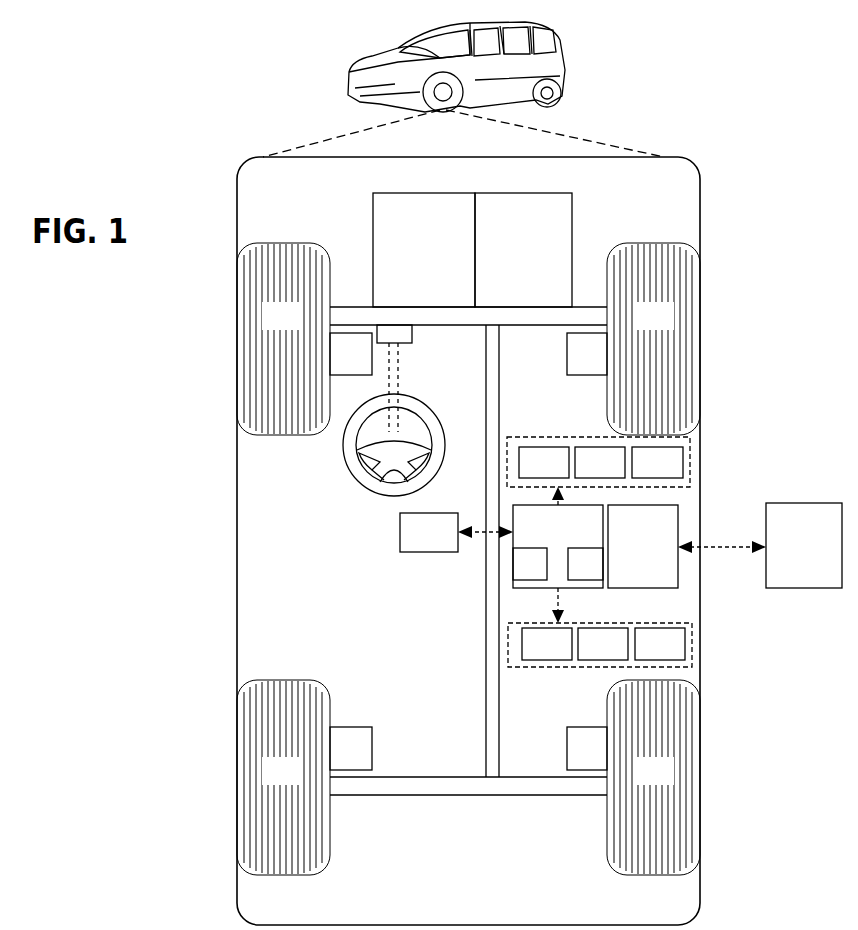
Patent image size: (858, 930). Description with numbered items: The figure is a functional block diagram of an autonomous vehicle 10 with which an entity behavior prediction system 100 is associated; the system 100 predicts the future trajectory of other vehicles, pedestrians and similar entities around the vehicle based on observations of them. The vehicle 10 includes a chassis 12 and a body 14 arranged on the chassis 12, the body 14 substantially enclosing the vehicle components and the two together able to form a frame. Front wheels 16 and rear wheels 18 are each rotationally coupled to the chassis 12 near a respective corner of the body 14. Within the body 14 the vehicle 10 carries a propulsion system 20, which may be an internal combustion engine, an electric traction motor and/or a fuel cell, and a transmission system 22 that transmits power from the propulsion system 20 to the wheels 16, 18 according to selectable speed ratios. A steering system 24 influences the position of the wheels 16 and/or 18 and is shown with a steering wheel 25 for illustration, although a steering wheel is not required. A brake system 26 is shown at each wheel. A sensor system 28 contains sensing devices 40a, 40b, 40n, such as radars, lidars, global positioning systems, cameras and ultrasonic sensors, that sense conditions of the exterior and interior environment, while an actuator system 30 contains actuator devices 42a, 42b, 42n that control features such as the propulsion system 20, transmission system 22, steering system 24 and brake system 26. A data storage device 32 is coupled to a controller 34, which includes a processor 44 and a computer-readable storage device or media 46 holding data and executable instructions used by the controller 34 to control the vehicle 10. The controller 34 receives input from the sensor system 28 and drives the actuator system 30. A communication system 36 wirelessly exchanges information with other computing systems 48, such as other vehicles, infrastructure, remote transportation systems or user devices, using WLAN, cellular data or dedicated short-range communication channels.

The vehicle 10 is at (346, 74).
The chassis 12 is at (495, 795).
The body 14 is at (237, 508).
The front wheels 16 is at (468, 339).
The rear wheels 18 is at (468, 777).
The propulsion system 20 is at (424, 250).
The transmission system 22 is at (523, 250).
The steering system 24 is at (362, 512).
The steering wheel 25 is at (432, 410).
The brake system 26 is at (468, 551).
The sensor system 28 is at (553, 437).
The actuator system 30 is at (540, 667).
The data storage device 32 is at (429, 532).
The controller 34 is at (558, 546).
The communication system 36 is at (643, 546).
The sensing device 40a is at (544, 462).
The sensing device 40b is at (600, 462).
The sensing device 40n is at (657, 462).
The actuator device 42a is at (547, 644).
The actuator device 42b is at (603, 644).
The actuator device 42n is at (660, 644).
The processor 44 is at (530, 564).
The computer-readable storage device or media 46 is at (585, 564).
The other computing systems 48 is at (804, 545).
The entity behavior prediction system 100 is at (733, 376).